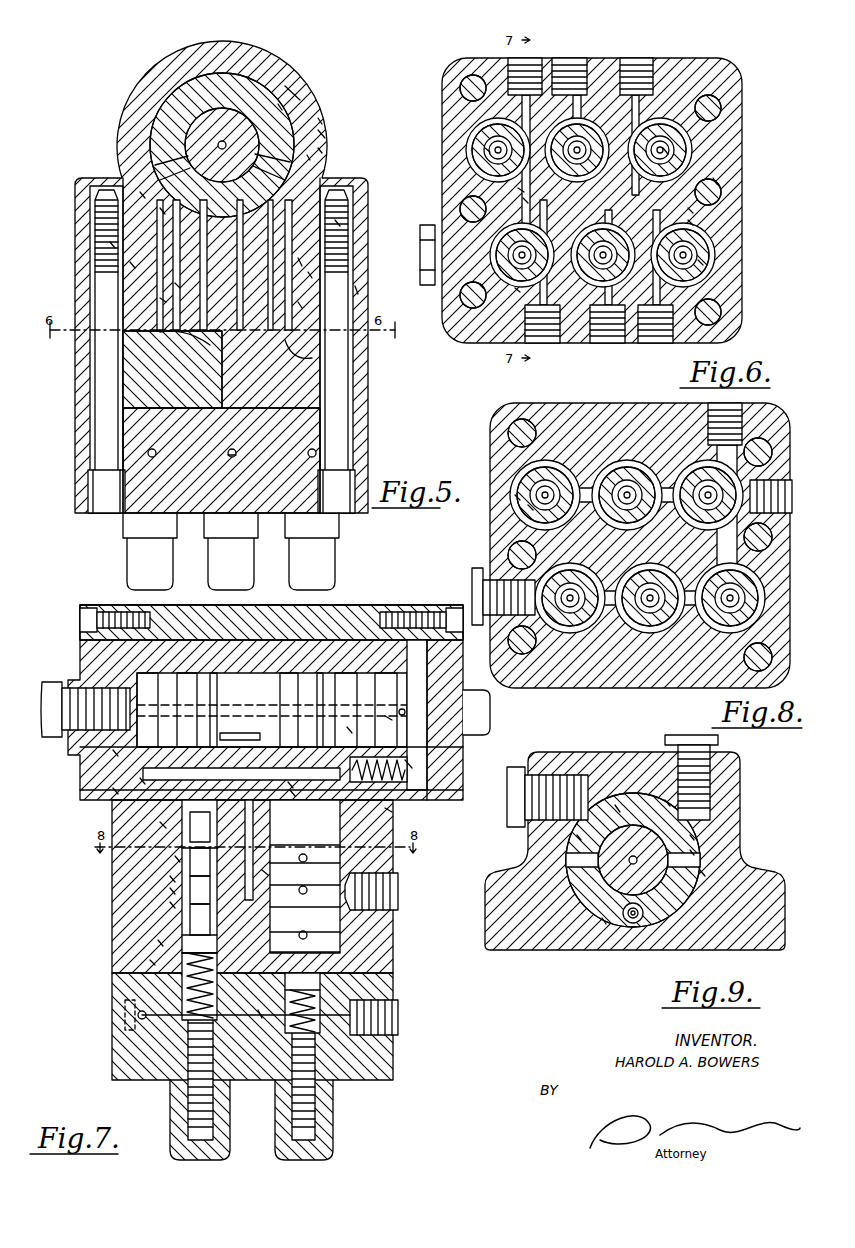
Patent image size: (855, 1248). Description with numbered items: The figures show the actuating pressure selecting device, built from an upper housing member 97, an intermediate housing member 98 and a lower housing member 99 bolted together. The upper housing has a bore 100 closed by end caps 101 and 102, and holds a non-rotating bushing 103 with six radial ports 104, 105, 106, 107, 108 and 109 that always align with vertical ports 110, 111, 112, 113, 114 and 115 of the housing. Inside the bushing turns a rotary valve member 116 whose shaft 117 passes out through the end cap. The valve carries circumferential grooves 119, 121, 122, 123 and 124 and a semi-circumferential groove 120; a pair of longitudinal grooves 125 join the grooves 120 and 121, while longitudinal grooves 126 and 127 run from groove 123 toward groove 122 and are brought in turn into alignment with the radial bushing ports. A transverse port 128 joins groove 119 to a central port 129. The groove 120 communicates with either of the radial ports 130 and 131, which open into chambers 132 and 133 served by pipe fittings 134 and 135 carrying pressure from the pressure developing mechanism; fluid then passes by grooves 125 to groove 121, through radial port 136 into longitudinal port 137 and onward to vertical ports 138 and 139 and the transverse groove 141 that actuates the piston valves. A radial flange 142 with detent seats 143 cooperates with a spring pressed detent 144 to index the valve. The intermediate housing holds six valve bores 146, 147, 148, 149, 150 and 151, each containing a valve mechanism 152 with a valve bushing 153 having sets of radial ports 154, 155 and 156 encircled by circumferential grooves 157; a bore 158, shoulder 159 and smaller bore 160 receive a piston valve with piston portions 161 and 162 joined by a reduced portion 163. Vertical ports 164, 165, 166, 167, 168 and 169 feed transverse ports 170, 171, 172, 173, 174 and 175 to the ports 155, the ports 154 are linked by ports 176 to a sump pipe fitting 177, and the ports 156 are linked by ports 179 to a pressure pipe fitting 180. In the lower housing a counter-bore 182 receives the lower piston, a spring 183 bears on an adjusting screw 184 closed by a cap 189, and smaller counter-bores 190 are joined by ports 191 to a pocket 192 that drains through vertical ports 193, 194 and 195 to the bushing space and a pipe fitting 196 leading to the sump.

In FIG. 5, the upper housing member 97 is at (318, 136).
In FIG. 9, the upper housing member 97 is at (728, 770).
In FIG. 7, the upper housing member 97 is at (122, 604).
In FIG. 5, the intermediate housing member 98 is at (356, 290).
In FIG. 6, the intermediate housing member 98 is at (694, 100).
In FIG. 8, the intermediate housing member 98 is at (496, 448).
In FIG. 7, the intermediate housing member 98 is at (384, 922).
In FIG. 5, the lower housing member 99 is at (366, 450).
In FIG. 7, the lower housing member 99 is at (112, 1065).
In FIG. 5, the bore 100 is at (287, 87).
In FIG. 7, the bore 100 is at (338, 648).
In FIG. 7, the end cap 101 is at (113, 790).
In FIG. 7, the end cap 102 is at (455, 757).
In FIG. 5, the bushing 103 is at (319, 130).
In FIG. 9, the bushing 103 is at (603, 921).
In FIG. 7, the bushing 103 is at (330, 648).
In FIG. 5, the radial port 104 is at (319, 120).
In FIG. 5, the radial port 105 is at (319, 150).
In FIG. 5, the radial port 106 is at (308, 157).
In FIG. 5, the radial port 107 is at (203, 198).
In FIG. 5, the radial port 108 is at (225, 225).
In FIG. 5, the radial port 109 is at (195, 160).
In FIG. 5, the vertical port 110 is at (349, 196).
In FIG. 5, the vertical port 111 is at (336, 210).
In FIG. 5, the vertical port 112 is at (336, 222).
In FIG. 5, the vertical port 113 is at (160, 210).
In FIG. 5, the vertical port 114 is at (140, 195).
In FIG. 5, the vertical port 115 is at (95, 180).
In FIG. 5, the rotary valve member 116 is at (276, 86).
In FIG. 9, the rotary valve member 116 is at (602, 920).
In FIG. 7, the rotary valve member 116 is at (143, 672).
In FIG. 7, the shaft 117 is at (491, 702).
In FIG. 7, the circumferential groove 119 is at (403, 693).
In FIG. 9, the semi-circumferential groove 120 is at (667, 802).
In FIG. 7, the semi-circumferential groove 120 is at (365, 697).
In FIG. 7, the circumferential groove 121 is at (331, 695).
In FIG. 7, the circumferential groove 122 is at (288, 698).
In FIG. 7, the circumferential groove 123 is at (212, 693).
In FIG. 7, the circumferential groove 124 is at (168, 693).
In FIG. 9, the longitudinal grooves 125 is at (617, 805).
In FIG. 7, the longitudinal grooves 125 is at (347, 727).
In FIG. 5, the longitudinal groove 126 is at (187, 143).
In FIG. 7, the longitudinal groove 126 is at (262, 700).
In FIG. 5, the longitudinal groove 127 is at (279, 105).
In FIG. 7, the longitudinal groove 127 is at (237, 736).
In FIG. 7, the transverse port 128 is at (405, 712).
In FIG. 5, the port 129 is at (221, 141).
In FIG. 9, the port 129 is at (638, 866).
In FIG. 7, the port 129 is at (388, 717).
In FIG. 9, the port 130 is at (695, 851).
In FIG. 9, the port 131 is at (578, 860).
In FIG. 9, the chamber 132 is at (691, 837).
In FIG. 9, the chamber 133 is at (577, 837).
In FIG. 9, the pipe fitting 134 is at (719, 742).
In FIG. 9, the pipe fitting 135 is at (511, 800).
In FIG. 7, the radial port 136 is at (386, 812).
In FIG. 5, the longitudinal port 137 is at (110, 245).
In FIG. 7, the longitudinal port 137 is at (290, 793).
In FIG. 7, the port 138 is at (290, 785).
In FIG. 7, the port 139 is at (203, 768).
In FIG. 7, the transverse groove 141 is at (184, 826).
In FIG. 7, the radial flange 142 is at (424, 747).
In FIG. 7, the detent seats 143 is at (456, 772).
In FIG. 9, the spring pressed detent 144 is at (622, 922).
In FIG. 7, the spring pressed detent 144 is at (408, 765).
In FIG. 6, the valve bore 146 is at (498, 118).
In FIG. 8, the valve bore 146 is at (547, 458).
In FIG. 6, the valve bore 147 is at (577, 60).
In FIG. 8, the valve bore 147 is at (627, 458).
In FIG. 6, the valve bore 148 is at (676, 96).
In FIG. 8, the valve bore 148 is at (708, 458).
In FIG. 6, the valve bore 149 is at (510, 278).
In FIG. 8, the valve bore 149 is at (578, 635).
In FIG. 6, the valve bore 150 is at (603, 287).
In FIG. 8, the valve bore 150 is at (650, 636).
In FIG. 6, the valve bore 151 is at (716, 258).
In FIG. 8, the valve bore 151 is at (725, 636).
In FIG. 6, the valve mechanism 152 is at (666, 150).
In FIG. 8, the valve mechanism 152 is at (520, 526).
In FIG. 6, the valve bushing 153 is at (700, 262).
In FIG. 8, the valve bushing 153 is at (530, 480).
In FIG. 7, the valve bushing 153 is at (167, 818).
In FIG. 7, the radial ports 154 is at (175, 858).
In FIG. 7, the radial ports 155 is at (170, 890).
In FIG. 7, the radial ports 156 is at (158, 942).
In FIG. 6, the circumferential groove 157 is at (517, 290).
In FIG. 8, the circumferential groove 157 is at (517, 497).
In FIG. 7, the circumferential groove 157 is at (173, 840).
In FIG. 7, the bore 158 is at (160, 825).
In FIG. 7, the shoulder 159 is at (170, 878).
In FIG. 7, the bore 160 is at (170, 905).
In FIG. 8, the piston portion 161 is at (530, 507).
In FIG. 7, the piston portion 161 is at (212, 858).
In FIG. 7, the piston portion 162 is at (203, 938).
In FIG. 6, the reduced portion 163 is at (486, 150).
In FIG. 7, the reduced portion 163 is at (212, 882).
In FIG. 5, the port 164 is at (300, 262).
In FIG. 6, the port 164 is at (690, 210).
In FIG. 5, the port 165 is at (310, 275).
In FIG. 5, the port 166 is at (300, 305).
In FIG. 5, the port 167 is at (130, 265).
In FIG. 5, the port 168 is at (175, 285).
In FIG. 5, the port 169 is at (160, 300).
In FIG. 6, the port 169 is at (525, 200).
In FIG. 7, the port 169 is at (265, 872).
In FIG. 6, the transverse port 170 is at (690, 222).
In FIG. 5, the transverse port 171 is at (313, 358).
In FIG. 6, the transverse port 171 is at (716, 180).
In FIG. 6, the transverse port 172 is at (630, 305).
In FIG. 5, the transverse port 173 is at (187, 362).
In FIG. 6, the transverse port 173 is at (610, 75).
In FIG. 6, the transverse port 174 is at (485, 222).
In FIG. 5, the transverse port 175 is at (210, 345).
In FIG. 6, the transverse port 175 is at (520, 190).
In FIG. 7, the transverse port 175 is at (268, 917).
In FIG. 8, the ports 176 is at (587, 488).
In FIG. 8, the pipe fitting 177 is at (481, 567).
In FIG. 6, the ports 179 is at (551, 75).
In FIG. 6, the pipe fitting 180 is at (430, 286).
In FIG. 7, the counter-bore 182 is at (167, 987).
In FIG. 7, the spring 183 is at (165, 1000).
In FIG. 7, the adjusting screw 184 is at (186, 1080).
In FIG. 5, the cap 189 is at (326, 548).
In FIG. 7, the cap 189 is at (324, 1115).
In FIG. 7, the counter-bore 190 is at (333, 833).
In FIG. 5, the ports 191 is at (228, 455).
In FIG. 7, the ports 191 is at (260, 1017).
In FIG. 7, the pocket 192 is at (130, 1023).
In FIG. 7, the vertical port 193 is at (150, 962).
In FIG. 7, the vertical port 194 is at (140, 780).
In FIG. 7, the vertical port 195 is at (113, 753).
In FIG. 7, the pipe fitting 196 is at (55, 680).